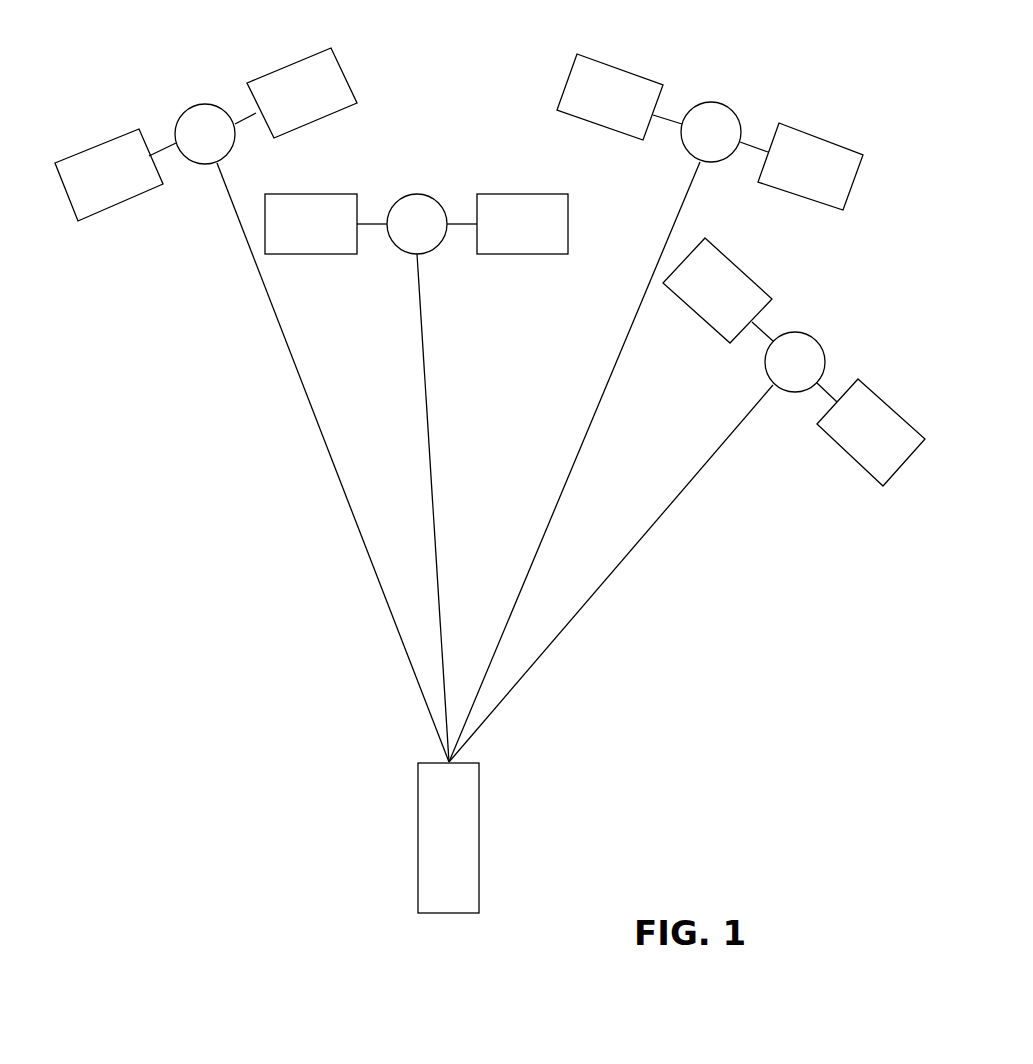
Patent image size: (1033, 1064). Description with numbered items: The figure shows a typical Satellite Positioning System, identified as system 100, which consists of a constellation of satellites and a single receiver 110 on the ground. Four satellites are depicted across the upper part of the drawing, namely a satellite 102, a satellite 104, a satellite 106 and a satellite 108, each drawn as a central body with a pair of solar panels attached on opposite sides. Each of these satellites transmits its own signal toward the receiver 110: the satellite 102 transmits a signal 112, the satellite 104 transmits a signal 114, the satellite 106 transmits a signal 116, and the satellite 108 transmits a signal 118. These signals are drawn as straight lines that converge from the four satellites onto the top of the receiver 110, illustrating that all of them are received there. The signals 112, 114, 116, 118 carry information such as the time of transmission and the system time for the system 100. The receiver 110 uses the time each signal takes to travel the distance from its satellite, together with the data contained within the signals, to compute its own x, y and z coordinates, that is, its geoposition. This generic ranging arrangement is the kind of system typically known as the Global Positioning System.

The system 100 is at (476, 74).
The satellite 102 is at (184, 110).
The satellite 104 is at (410, 195).
The satellite 106 is at (707, 102).
The satellite 108 is at (822, 342).
The receiver 110 is at (419, 837).
The signal 112 is at (298, 373).
The signal 114 is at (424, 362).
The signal 116 is at (663, 252).
The signal 118 is at (710, 458).